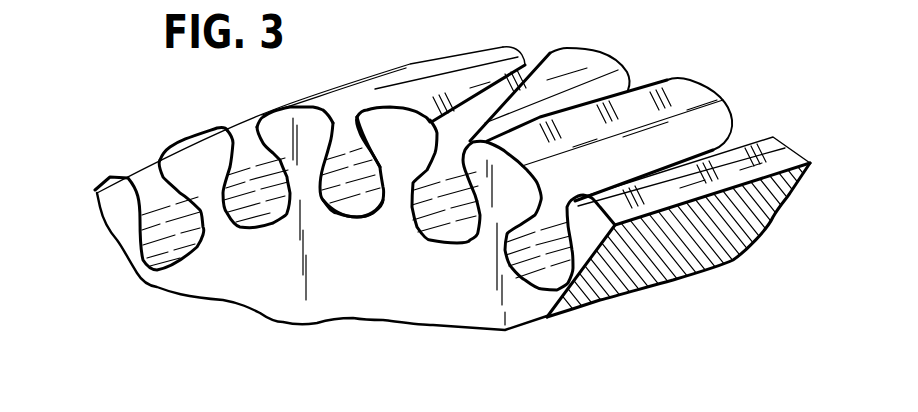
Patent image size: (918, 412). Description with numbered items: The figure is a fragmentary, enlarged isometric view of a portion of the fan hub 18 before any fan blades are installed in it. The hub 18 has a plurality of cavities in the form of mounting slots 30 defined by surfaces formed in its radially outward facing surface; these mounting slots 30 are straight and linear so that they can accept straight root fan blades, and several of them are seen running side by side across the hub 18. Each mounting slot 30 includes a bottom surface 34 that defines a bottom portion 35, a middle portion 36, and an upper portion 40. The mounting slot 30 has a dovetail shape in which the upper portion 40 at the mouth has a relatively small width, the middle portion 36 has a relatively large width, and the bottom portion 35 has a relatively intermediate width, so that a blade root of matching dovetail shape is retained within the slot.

The hub 18 is at (98, 126).
The mounting slot 30 is at (360, 205).
The bottom surface 34 is at (362, 208).
The bottom portion 35 is at (370, 205).
The middle portion 36 is at (327, 199).
The upper portion 40 is at (320, 140).